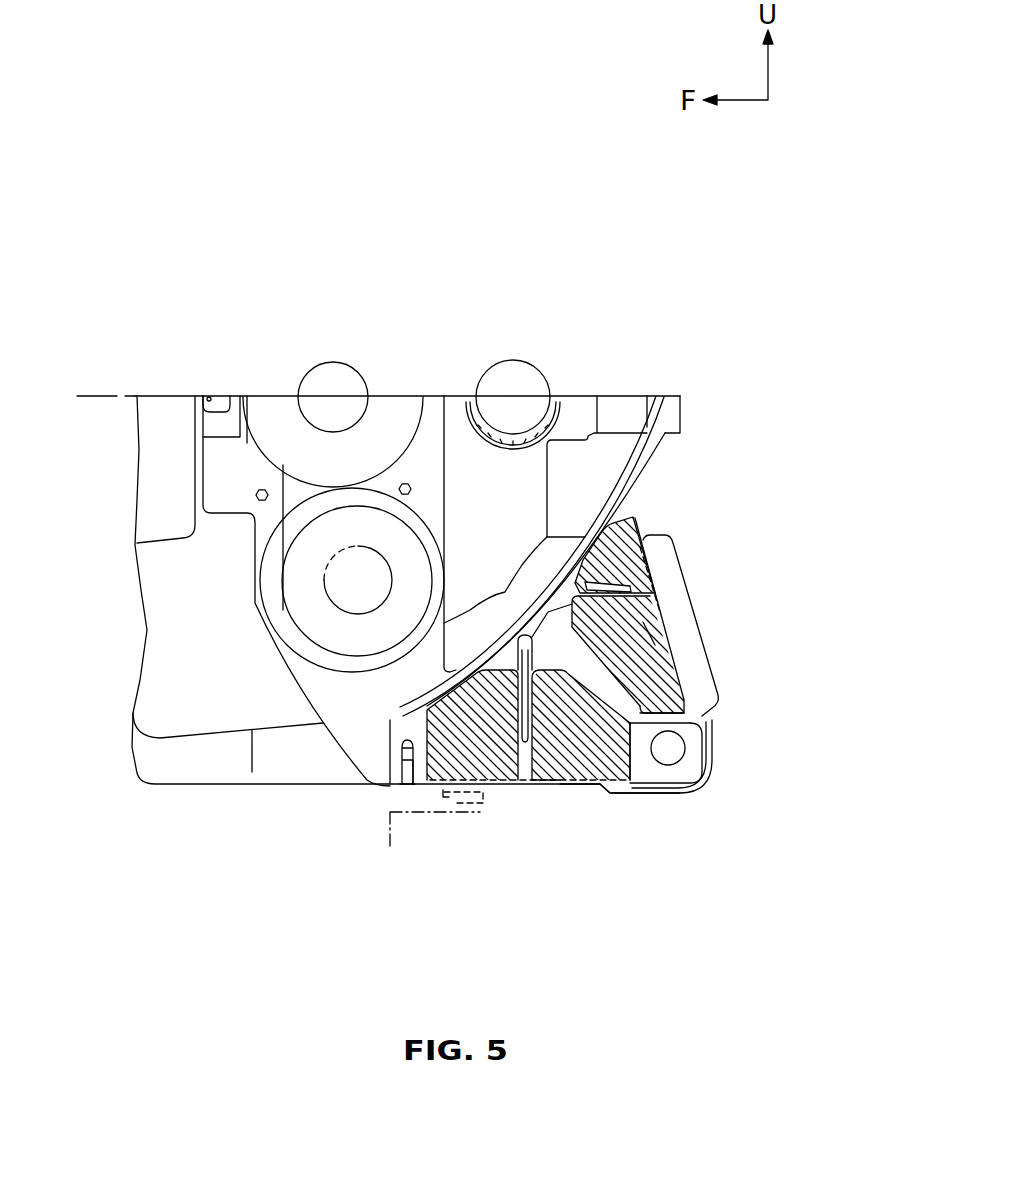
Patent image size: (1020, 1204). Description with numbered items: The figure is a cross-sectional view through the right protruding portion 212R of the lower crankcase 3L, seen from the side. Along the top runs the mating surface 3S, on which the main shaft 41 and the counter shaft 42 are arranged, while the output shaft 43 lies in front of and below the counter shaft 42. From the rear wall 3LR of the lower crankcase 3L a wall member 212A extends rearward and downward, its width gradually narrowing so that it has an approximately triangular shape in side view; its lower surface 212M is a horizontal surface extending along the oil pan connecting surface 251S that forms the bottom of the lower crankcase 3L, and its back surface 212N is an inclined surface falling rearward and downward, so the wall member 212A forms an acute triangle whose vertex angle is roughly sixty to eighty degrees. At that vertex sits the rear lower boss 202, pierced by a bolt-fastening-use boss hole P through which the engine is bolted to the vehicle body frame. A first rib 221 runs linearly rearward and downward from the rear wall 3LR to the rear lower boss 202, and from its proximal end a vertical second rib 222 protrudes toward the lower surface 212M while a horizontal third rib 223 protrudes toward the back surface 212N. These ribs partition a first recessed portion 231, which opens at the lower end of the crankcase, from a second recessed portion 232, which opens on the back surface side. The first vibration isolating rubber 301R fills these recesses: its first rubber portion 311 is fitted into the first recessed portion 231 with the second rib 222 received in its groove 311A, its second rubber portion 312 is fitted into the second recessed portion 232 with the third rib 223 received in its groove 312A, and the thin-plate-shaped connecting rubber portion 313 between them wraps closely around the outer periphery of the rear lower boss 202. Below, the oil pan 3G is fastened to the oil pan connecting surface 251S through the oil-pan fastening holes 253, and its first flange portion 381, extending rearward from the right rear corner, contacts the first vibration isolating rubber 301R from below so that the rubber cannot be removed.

The mating surface 3S is at (357, 397).
The lower crankcase 3L is at (660, 373).
The rear wall 3LR is at (660, 447).
The oil pan 3G is at (394, 858).
The main shaft 41 is at (336, 360).
The counter shaft 42 is at (514, 366).
The output shaft 43 is at (347, 550).
The second recessed portion 232 is at (655, 492).
The protruding portion 212R is at (685, 525).
The third rib 223 is at (630, 590).
The groove 312A is at (640, 622).
The second rubber portion 312 is at (640, 600).
The back surface 212N is at (673, 637).
The first rib 221 is at (650, 712).
The rear lower boss 202 is at (688, 742).
The boss hole P is at (670, 750).
The connecting rubber portion 313 is at (708, 776).
The first vibration isolating rubber 301R is at (669, 799).
The wall member 212A is at (606, 796).
The lower surface 212M is at (545, 783).
The second rib 222 is at (540, 757).
The groove 311A is at (524, 760).
The first rubber portion 311 is at (496, 757).
The first flange portion 381 is at (453, 786).
The first recessed portion 231 is at (413, 783).
The oil pan connecting surface 251S is at (405, 782).
The oil-pan fastening holes 253 is at (403, 772).